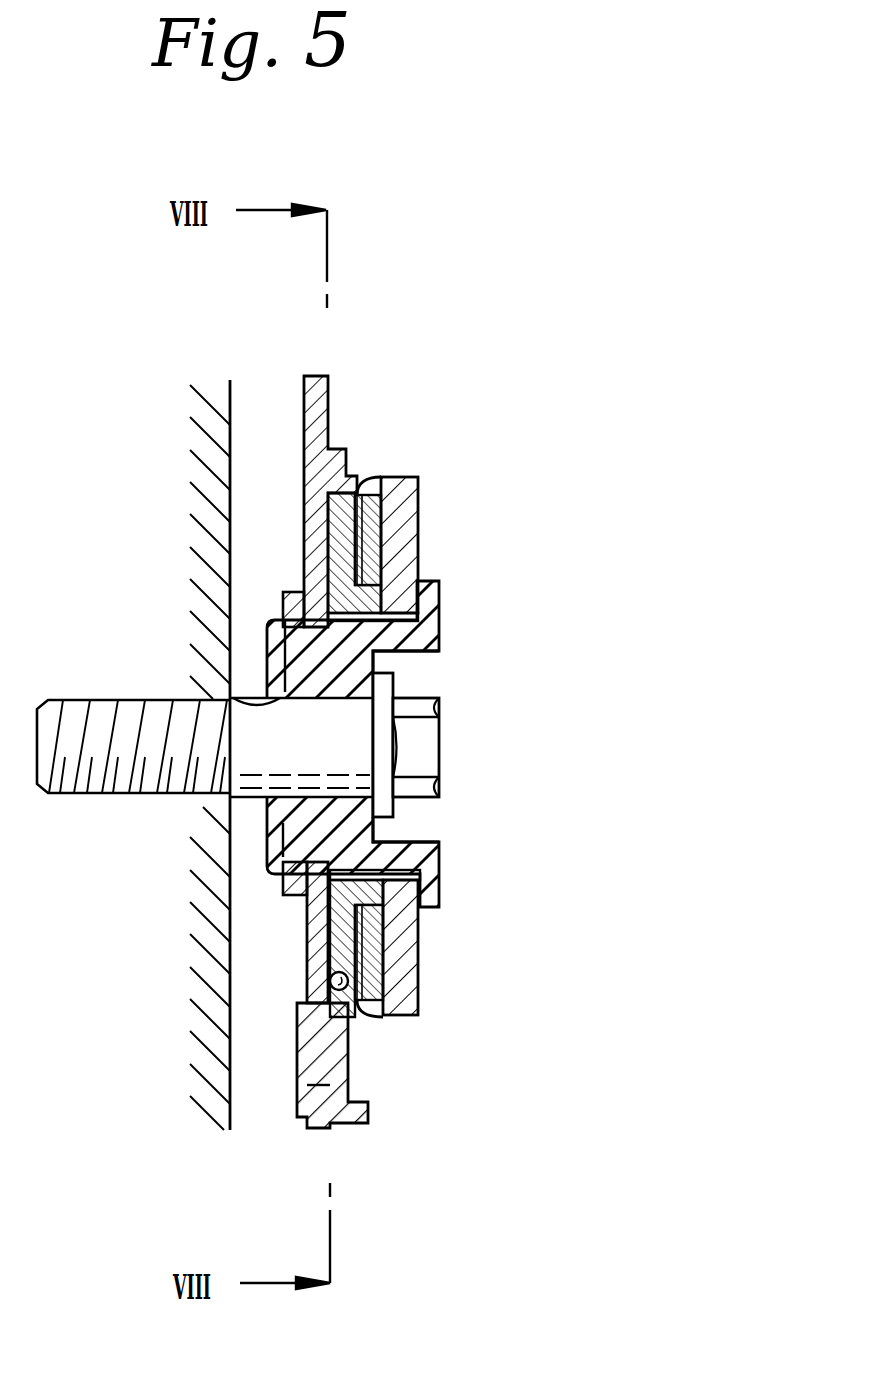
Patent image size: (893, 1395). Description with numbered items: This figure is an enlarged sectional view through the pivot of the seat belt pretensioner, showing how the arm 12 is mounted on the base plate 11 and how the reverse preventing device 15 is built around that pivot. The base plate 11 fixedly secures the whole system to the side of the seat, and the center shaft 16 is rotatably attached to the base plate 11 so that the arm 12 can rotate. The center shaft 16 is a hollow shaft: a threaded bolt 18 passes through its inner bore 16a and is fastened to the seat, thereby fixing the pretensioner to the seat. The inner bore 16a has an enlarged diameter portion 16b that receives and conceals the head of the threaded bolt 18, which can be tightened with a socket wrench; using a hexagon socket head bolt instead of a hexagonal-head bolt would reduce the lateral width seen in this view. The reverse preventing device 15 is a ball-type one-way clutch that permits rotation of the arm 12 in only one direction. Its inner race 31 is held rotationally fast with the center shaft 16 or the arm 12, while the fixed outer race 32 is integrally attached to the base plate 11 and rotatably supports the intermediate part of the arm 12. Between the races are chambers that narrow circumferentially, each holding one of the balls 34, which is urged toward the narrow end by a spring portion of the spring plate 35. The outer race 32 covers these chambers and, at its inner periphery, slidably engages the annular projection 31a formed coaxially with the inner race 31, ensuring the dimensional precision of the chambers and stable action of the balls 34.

The base plate 11 is at (311, 427).
The arm 12 is at (420, 1004).
The reverse preventing device 15 is at (402, 420).
The center shaft 16 is at (439, 622).
The inner bore 16a is at (232, 690).
The enlarged diameter portion 16b is at (400, 655).
The threaded bolt 18 is at (440, 790).
The inner race 31 is at (337, 901).
The annular projection 31a is at (394, 890).
The fixed outer race 32 is at (350, 1062).
The balls 34 is at (339, 982).
The spring plate 35 is at (366, 542).